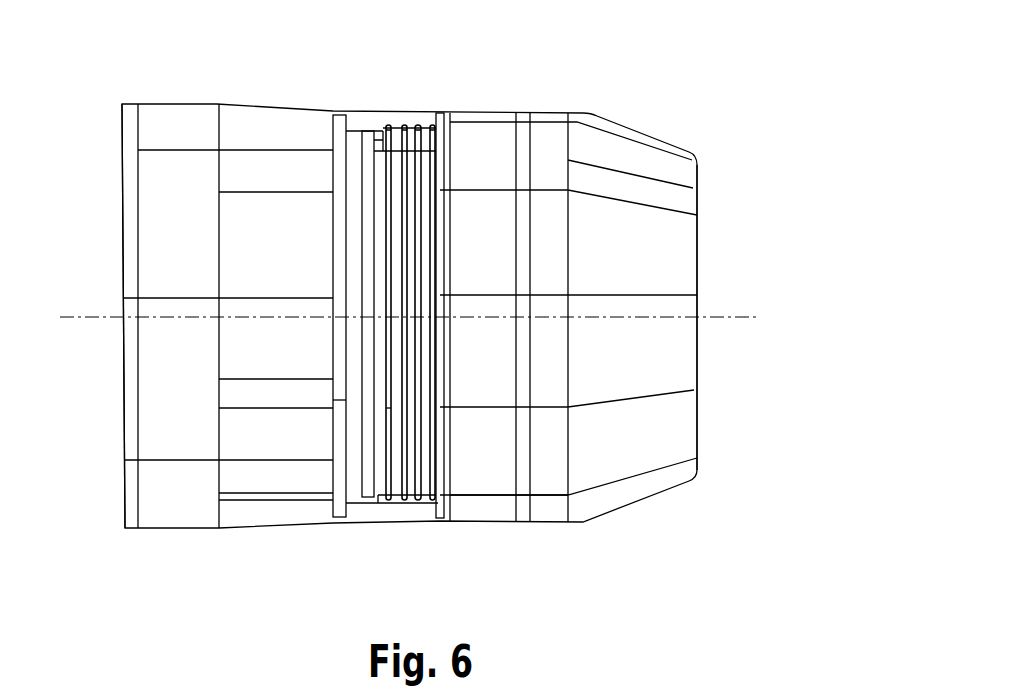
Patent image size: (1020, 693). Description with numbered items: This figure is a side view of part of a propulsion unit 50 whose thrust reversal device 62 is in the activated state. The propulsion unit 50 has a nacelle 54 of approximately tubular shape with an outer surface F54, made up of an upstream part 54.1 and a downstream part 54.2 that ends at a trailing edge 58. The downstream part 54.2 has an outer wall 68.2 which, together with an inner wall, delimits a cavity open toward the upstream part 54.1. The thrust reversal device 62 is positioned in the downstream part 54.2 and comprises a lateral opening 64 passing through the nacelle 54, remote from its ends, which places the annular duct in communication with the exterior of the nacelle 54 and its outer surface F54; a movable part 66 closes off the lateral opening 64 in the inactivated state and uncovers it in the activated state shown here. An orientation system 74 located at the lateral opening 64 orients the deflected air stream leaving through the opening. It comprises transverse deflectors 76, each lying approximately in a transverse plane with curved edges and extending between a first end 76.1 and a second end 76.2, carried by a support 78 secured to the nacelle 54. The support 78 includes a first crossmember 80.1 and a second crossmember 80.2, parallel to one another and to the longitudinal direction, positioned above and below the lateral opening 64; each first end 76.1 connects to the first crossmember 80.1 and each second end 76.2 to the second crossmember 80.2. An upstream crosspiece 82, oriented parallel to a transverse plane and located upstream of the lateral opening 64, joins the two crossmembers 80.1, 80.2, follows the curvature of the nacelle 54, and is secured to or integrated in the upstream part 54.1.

The propulsion unit 50 is at (123, 85).
The nacelle 54 is at (697, 567).
The upstream part 54.1 is at (180, 137).
The outer surface F54 is at (273, 135).
The downstream part 54.2 is at (560, 130).
The trailing edge 58 is at (698, 200).
The thrust reversal device 62 is at (418, 118).
The lateral opening 64 is at (372, 131).
The movable part 66 is at (530, 127).
The outer wall 68.2 is at (475, 505).
The orientation system 74 is at (392, 408).
The transverse deflector 76 is at (420, 216).
The first end 76.1 is at (403, 125).
The second end 76.2 is at (425, 503).
The support 78 is at (354, 398).
The first crossmember 80.1 is at (383, 128).
The second crossmember 80.2 is at (382, 497).
The upstream crosspiece 82 is at (333, 213).